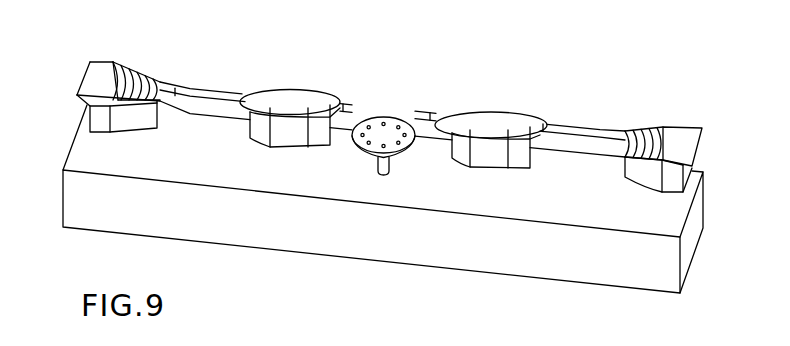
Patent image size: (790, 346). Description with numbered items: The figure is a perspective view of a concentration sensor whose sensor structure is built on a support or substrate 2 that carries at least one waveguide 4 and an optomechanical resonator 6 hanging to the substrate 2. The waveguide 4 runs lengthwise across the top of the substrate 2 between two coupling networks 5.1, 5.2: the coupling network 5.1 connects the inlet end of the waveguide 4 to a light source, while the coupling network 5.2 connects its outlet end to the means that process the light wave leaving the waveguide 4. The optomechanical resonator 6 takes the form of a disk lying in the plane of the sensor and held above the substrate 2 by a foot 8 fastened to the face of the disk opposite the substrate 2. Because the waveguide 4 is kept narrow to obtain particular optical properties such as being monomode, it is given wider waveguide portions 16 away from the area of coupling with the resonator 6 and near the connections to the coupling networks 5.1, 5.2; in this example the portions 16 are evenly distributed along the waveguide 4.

The substrate 2 is at (76, 143).
The waveguide 4 is at (505, 102).
The coupling network 5.1 is at (107, 75).
The coupling network 5.2 is at (687, 129).
The optomechanical resonator 6 is at (363, 167).
The foot 8 is at (378, 177).
The waveguide portions 16 is at (260, 130).